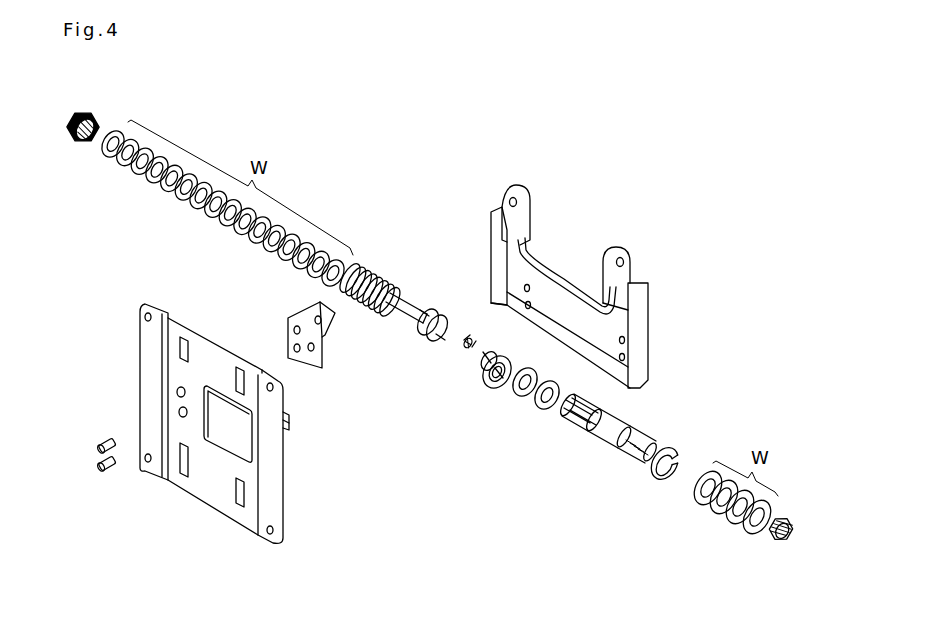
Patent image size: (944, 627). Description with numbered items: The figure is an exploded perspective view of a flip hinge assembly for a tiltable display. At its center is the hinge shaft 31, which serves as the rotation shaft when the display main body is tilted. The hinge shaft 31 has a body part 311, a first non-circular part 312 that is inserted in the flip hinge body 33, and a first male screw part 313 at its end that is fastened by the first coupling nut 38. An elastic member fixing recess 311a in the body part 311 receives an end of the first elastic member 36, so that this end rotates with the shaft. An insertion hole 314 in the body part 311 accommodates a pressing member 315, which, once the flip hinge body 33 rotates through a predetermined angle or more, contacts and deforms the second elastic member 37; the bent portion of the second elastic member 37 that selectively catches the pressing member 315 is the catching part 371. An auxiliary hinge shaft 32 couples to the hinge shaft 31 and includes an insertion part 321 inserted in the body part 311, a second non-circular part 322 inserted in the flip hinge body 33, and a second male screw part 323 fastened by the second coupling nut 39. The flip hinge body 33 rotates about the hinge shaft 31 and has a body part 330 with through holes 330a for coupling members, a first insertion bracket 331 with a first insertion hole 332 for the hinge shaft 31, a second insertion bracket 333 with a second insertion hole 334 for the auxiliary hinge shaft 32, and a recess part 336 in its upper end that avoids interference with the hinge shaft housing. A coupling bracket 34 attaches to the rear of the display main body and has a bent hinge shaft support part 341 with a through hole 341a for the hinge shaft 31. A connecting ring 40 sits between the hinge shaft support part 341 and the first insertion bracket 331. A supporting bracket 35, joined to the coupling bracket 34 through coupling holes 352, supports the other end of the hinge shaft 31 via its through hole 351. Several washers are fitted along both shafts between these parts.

The hinge shaft 31 is at (605, 448).
The body part 311 is at (593, 437).
The elastic member fixing recess 311a is at (568, 410).
The first non-circular part 312 is at (617, 447).
The first male screw part 313 is at (640, 437).
The insertion hole 314 is at (590, 408).
The pressing member 315 is at (466, 352).
The auxiliary hinge shaft 32 is at (415, 328).
The insertion part 321 is at (431, 316).
The second non-circular part 322 is at (417, 333).
The second male screw part 323 is at (398, 310).
The flip hinge body 33 is at (566, 265).
The body part 330 is at (534, 318).
The through holes 330a is at (523, 292).
The first insertion bracket 331 is at (641, 257).
The first insertion hole 332 is at (624, 262).
The second insertion bracket 333 is at (535, 194).
The second insertion hole 334 is at (517, 202).
The recess part 336 is at (567, 287).
The coupling bracket 34 is at (246, 420).
The hinge shaft support part 341 is at (289, 420).
The through hole 341a is at (289, 428).
The supporting bracket 35 is at (297, 330).
The through hole 351 is at (317, 307).
The coupling holes 352 is at (290, 330).
The first elastic member 36 is at (370, 274).
The second elastic member 37 is at (496, 373).
The catching part 371 is at (491, 352).
The first coupling nut 38 is at (770, 547).
The second coupling nut 39 is at (84, 110).
The connecting ring 40 is at (657, 478).